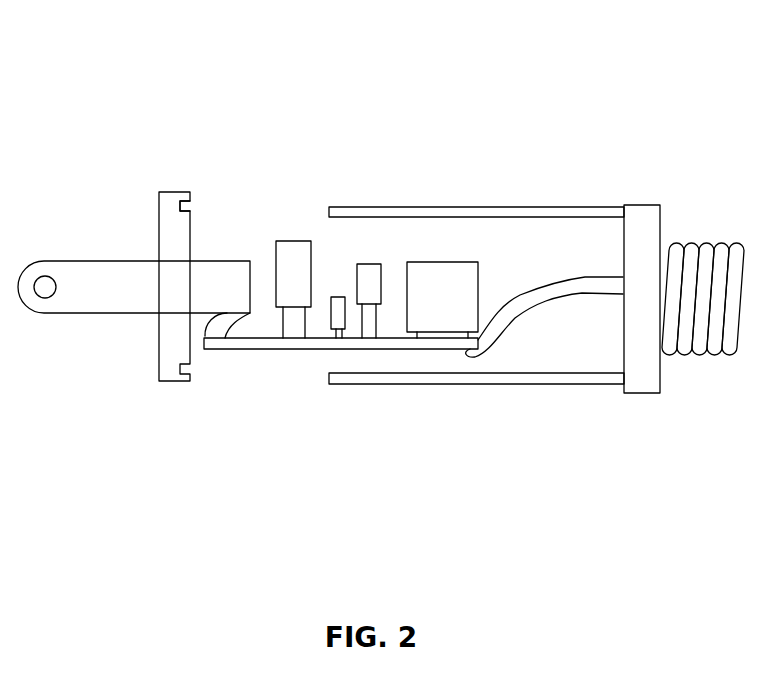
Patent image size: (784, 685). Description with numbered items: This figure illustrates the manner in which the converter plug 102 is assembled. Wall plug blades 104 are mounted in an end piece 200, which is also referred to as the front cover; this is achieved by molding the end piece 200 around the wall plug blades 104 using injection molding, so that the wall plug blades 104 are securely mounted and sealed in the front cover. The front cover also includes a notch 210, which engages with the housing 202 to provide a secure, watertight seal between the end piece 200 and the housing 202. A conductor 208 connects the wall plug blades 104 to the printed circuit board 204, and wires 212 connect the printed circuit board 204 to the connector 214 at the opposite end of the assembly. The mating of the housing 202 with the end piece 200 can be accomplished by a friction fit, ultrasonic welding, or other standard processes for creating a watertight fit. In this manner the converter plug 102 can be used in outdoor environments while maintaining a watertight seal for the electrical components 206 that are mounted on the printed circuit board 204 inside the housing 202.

The converter plug 102 is at (358, 110).
The wall plug blades 104 is at (75, 322).
The end piece 200 is at (180, 192).
The housing 202 is at (435, 385).
The printed circuit board 204 is at (303, 350).
The electrical components 206 is at (499, 265).
The conductor 208 is at (230, 340).
The notch 210 is at (192, 207).
The wires 212 is at (558, 320).
The connector 214 is at (695, 366).